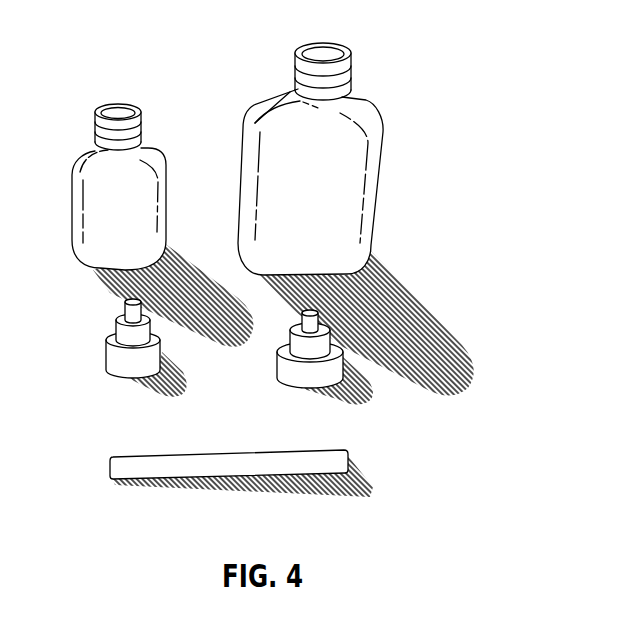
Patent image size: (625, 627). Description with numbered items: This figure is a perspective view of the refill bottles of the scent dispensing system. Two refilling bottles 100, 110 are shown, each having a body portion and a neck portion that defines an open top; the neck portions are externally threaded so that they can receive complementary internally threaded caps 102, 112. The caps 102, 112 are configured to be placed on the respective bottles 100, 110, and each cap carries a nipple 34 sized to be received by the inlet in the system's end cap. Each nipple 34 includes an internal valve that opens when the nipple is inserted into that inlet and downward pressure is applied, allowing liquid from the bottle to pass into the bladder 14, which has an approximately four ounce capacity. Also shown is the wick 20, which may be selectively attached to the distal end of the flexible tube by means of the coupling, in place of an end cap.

The refilling bottle 100 is at (148, 142).
The refilling bottle 110 is at (368, 100).
The cap 102 is at (107, 340).
The nipple 34 is at (122, 307).
The cap 112 is at (345, 352).
The bladder 14 is at (323, 317).
The wick 20 is at (162, 477).